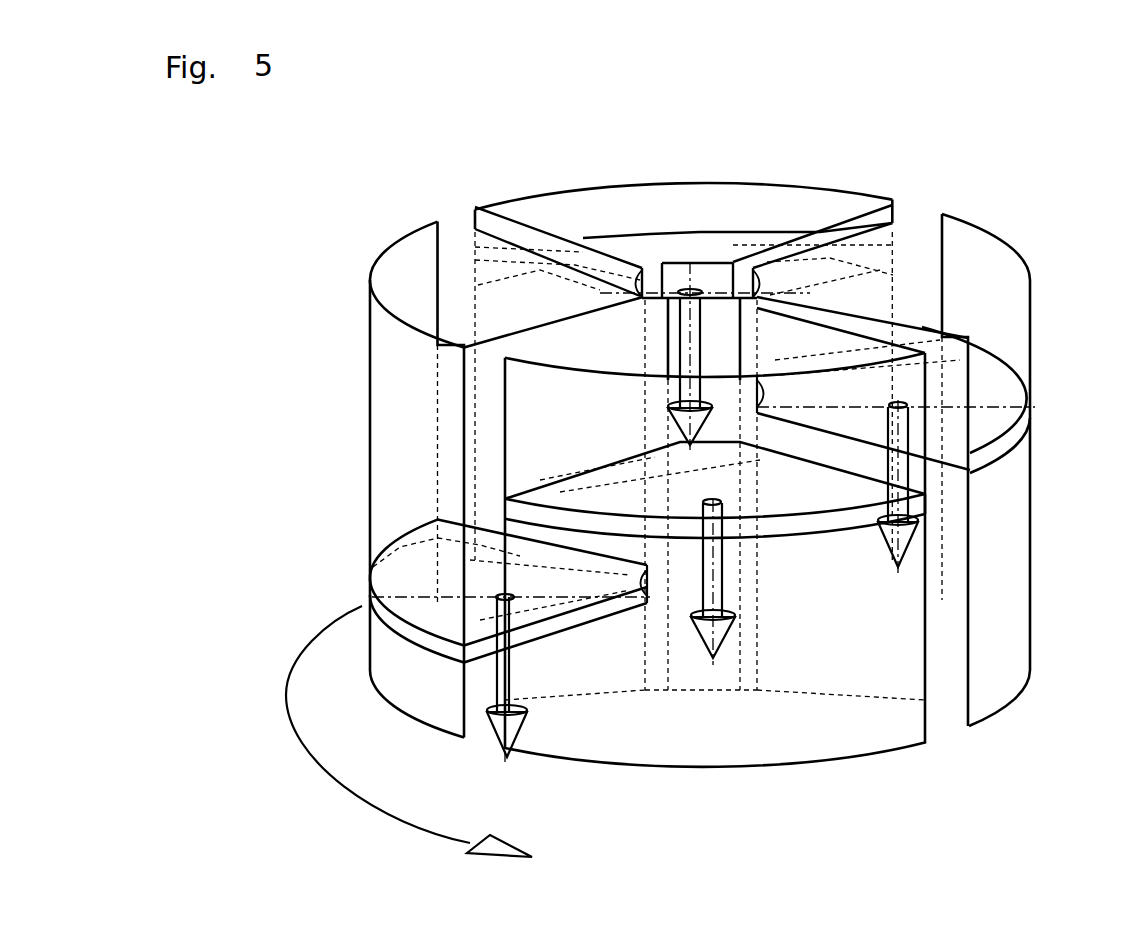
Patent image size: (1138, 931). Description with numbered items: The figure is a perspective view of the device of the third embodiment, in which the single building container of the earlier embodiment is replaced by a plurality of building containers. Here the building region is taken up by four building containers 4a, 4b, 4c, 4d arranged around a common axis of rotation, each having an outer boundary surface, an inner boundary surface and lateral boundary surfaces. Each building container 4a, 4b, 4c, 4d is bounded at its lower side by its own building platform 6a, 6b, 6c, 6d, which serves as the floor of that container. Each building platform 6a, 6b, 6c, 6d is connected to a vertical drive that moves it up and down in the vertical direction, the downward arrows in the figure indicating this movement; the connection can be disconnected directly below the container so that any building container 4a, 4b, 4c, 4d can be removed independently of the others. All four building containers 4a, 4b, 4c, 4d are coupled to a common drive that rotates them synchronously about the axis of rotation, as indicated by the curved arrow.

The building container 4a is at (800, 740).
The building container 4b is at (990, 672).
The building container 4c is at (722, 205).
The building container 4d is at (402, 390).
The building platform 6a is at (930, 505).
The building platform 6b is at (1022, 424).
The building platform 6c is at (762, 236).
The building platform 6d is at (382, 531).